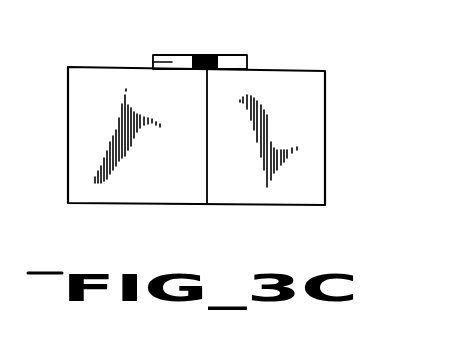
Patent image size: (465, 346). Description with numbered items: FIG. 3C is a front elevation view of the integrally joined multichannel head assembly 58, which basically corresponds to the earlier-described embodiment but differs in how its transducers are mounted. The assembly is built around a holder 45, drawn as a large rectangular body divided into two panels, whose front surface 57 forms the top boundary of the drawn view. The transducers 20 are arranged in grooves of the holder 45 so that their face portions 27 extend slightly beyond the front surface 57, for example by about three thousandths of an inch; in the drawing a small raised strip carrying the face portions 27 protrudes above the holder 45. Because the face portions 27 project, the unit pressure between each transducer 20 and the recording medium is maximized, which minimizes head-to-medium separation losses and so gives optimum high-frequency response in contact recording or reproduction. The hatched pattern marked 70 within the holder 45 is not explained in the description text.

The transducers 20 is at (153, 62).
The face portions 27 is at (228, 55).
The holder 45 is at (73, 102).
The front surface 57 is at (87, 66).
The multichannel head assembly 58 is at (310, 60).
The hatched trace pattern 70 is at (322, 113).